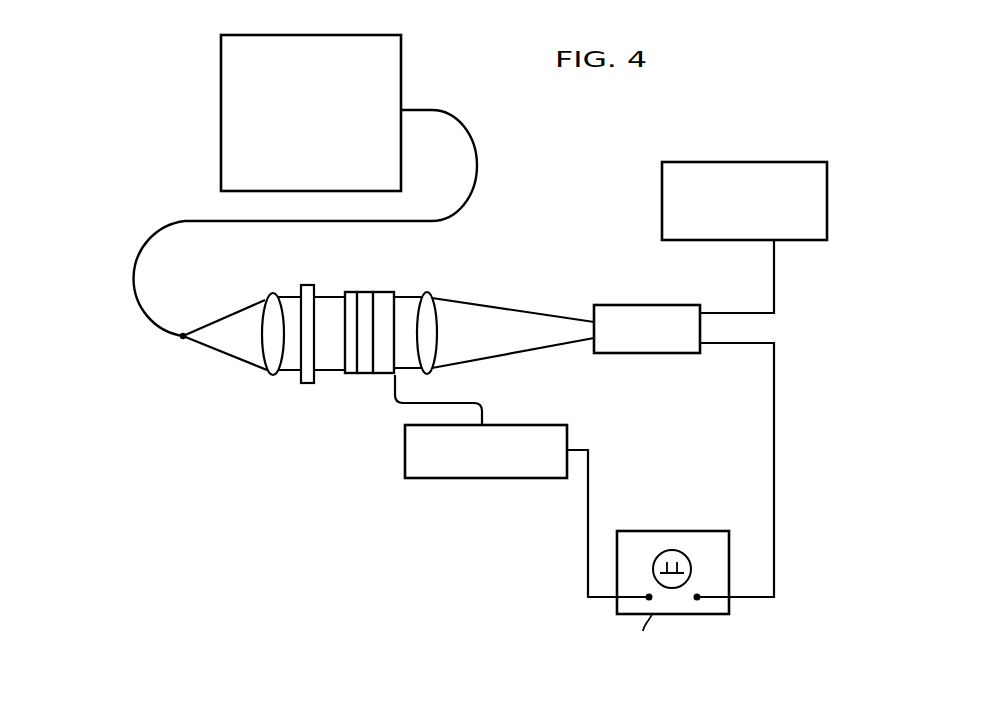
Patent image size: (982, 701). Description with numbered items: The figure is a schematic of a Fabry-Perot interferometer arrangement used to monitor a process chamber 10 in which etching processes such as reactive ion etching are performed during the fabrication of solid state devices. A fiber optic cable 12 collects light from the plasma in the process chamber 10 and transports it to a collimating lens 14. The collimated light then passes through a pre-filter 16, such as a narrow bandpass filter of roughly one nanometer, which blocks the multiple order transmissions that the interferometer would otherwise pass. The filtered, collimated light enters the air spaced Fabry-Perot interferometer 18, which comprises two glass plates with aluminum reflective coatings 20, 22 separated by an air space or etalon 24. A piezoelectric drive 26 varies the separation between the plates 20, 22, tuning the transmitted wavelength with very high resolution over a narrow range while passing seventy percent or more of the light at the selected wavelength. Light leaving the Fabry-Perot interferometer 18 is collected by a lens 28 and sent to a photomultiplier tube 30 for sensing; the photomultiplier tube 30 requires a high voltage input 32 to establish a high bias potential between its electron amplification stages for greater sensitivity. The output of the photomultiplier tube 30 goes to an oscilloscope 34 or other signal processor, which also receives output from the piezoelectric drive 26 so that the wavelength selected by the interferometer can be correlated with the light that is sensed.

The process chamber 10 is at (401, 57).
The fiber optic cable 12 is at (476, 158).
The collimating lens 14 is at (265, 300).
The pre-filter 16 is at (308, 390).
The Fabry-Perot interferometer 18 is at (380, 391).
The glass plate with aluminum reflective coating 20 is at (354, 292).
The glass plate with aluminum reflective coating 22 is at (382, 292).
The air space (etalon) 24 is at (368, 292).
The piezoelectric drive 26 is at (538, 425).
The lens 28 is at (437, 300).
The photomultiplier tube 30 is at (644, 305).
The high voltage input 32 is at (747, 162).
The oscilloscope 34 is at (693, 531).